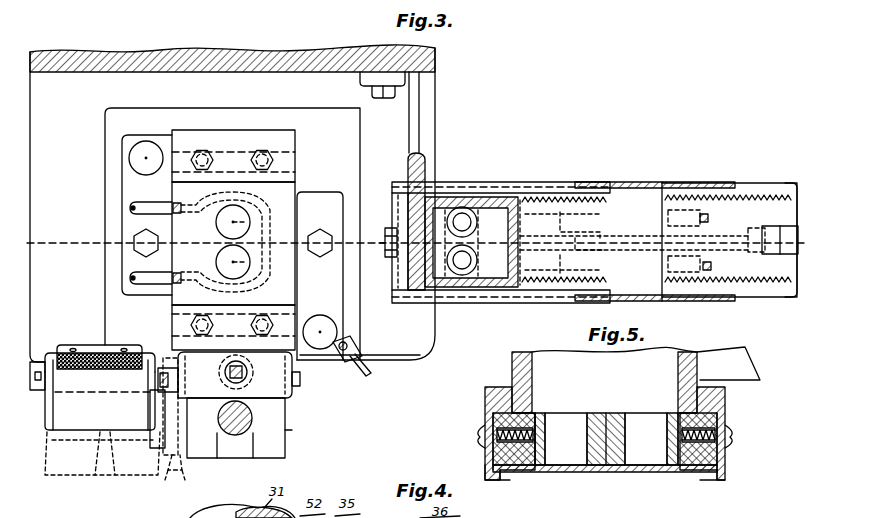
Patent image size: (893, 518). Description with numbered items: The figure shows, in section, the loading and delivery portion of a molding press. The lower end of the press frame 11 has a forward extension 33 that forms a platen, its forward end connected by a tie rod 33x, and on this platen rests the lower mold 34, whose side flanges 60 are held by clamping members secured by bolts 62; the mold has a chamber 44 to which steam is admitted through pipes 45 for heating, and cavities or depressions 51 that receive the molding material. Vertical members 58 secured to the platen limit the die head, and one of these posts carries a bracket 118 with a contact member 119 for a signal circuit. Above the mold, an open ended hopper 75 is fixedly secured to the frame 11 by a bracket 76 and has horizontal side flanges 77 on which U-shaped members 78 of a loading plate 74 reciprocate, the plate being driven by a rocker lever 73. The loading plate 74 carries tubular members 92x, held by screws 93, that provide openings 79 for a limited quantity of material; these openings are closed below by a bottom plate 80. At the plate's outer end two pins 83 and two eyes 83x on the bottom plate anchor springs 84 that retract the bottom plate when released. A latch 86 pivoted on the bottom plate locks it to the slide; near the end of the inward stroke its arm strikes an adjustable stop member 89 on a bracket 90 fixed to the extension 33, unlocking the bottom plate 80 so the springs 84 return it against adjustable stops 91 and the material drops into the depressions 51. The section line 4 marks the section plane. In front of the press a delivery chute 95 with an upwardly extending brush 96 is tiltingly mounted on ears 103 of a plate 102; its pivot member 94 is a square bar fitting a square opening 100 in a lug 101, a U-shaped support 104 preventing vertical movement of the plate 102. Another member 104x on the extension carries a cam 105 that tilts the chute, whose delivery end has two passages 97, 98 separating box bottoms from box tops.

In FIG. 3, the press frame 11 is at (431, 66).
In FIG. 3, the bracket 76 is at (419, 132).
In FIG. 5, the bracket 76 is at (730, 360).
In FIG. 3, the axis center line 4 is at (412, 243).
In FIG. 3, the vertical member 58 is at (127, 158).
In FIG. 3, the pipe 45 is at (131, 211).
In FIG. 3, the side flange 60 is at (238, 148).
In FIG. 3, the bolt 62 is at (204, 150).
In FIG. 3, the chamber 44 is at (258, 197).
In FIG. 3, the cavity or depression 51 is at (226, 258).
In FIG. 3, the lower mold 34 is at (297, 212).
In FIG. 3, the contact member 119 is at (352, 343).
In FIG. 3, the bracket 118 is at (361, 373).
In FIG. 3, the forward extension 33 is at (436, 346).
In FIG. 3, the brush 96 is at (82, 348).
In FIG. 3, the ear 103 is at (162, 350).
In FIG. 3, the delivery chute 95 is at (53, 427).
In FIG. 3, the passage 97 is at (66, 478).
In FIG. 3, the passage 98 is at (102, 469).
In FIG. 3, the plate 102 is at (208, 398).
In FIG. 3, the cam 105 is at (176, 458).
In FIG. 3, the member 104x is at (180, 483).
In FIG. 3, the lug 101 is at (252, 372).
In FIG. 3, the pivot member 94 is at (247, 379).
In FIG. 3, the square opening 100 is at (248, 402).
In FIG. 3, the U-shaped support 104 is at (292, 388).
In FIG. 3, the tie rod 33x is at (287, 428).
In FIG. 3, the eye 83x is at (546, 182).
In FIG. 3, the adjustable stop member 89 is at (390, 257).
In FIG. 3, the hopper 75 is at (496, 196).
In FIG. 5, the hopper 75 is at (520, 355).
In FIG. 3, the opening 79 is at (464, 207).
In FIG. 5, the opening 79 is at (568, 421).
In FIG. 3, the tubular member 92x is at (470, 256).
In FIG. 5, the tubular member 92x is at (541, 414).
In FIG. 3, the latch 86 is at (612, 182).
In FIG. 3, the bracket 90 is at (590, 303).
In FIG. 3, the U-shaped member 78 is at (663, 182).
In FIG. 5, the U-shaped member 78 is at (483, 443).
In FIG. 3, the spring 84 is at (748, 192).
In FIG. 3, the pin 83 is at (791, 183).
In FIG. 3, the adjustable stop 91 is at (708, 218).
In FIG. 3, the rocker lever 73 is at (765, 228).
In FIG. 5, the horizontal side flange 77 is at (490, 401).
In FIG. 5, the screw 93 is at (518, 474).
In FIG. 5, the bottom plate 80 is at (603, 473).
In FIG. 5, the loading plate 74 is at (540, 478).